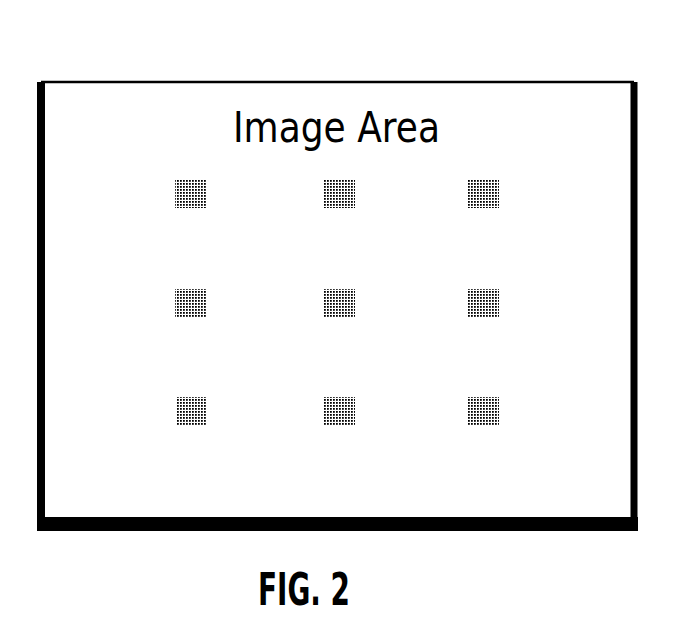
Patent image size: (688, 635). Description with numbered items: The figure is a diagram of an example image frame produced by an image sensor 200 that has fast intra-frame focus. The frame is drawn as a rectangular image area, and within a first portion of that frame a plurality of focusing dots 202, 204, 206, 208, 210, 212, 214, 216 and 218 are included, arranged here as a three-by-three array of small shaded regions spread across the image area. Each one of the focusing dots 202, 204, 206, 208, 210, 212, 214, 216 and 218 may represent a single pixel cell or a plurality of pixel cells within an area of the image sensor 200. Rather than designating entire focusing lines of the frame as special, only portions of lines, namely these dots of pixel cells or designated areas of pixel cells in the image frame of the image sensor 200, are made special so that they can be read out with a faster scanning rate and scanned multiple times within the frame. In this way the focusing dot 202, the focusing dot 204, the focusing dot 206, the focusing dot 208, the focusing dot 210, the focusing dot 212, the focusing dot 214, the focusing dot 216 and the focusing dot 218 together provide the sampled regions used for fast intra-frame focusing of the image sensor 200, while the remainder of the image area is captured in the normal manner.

The image sensor 200 is at (687, 50).
The focusing dot 202 is at (170, 193).
The focusing dot 204 is at (320, 200).
The focusing dot 206 is at (461, 200).
The focusing dot 208 is at (170, 308).
The focusing dot 210 is at (320, 312).
The focusing dot 212 is at (461, 312).
The focusing dot 214 is at (173, 412).
The focusing dot 216 is at (323, 415).
The focusing dot 218 is at (465, 415).